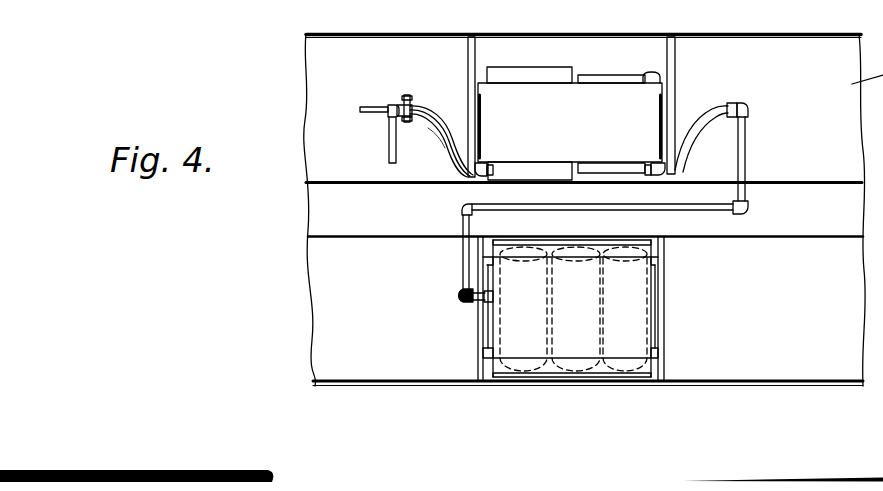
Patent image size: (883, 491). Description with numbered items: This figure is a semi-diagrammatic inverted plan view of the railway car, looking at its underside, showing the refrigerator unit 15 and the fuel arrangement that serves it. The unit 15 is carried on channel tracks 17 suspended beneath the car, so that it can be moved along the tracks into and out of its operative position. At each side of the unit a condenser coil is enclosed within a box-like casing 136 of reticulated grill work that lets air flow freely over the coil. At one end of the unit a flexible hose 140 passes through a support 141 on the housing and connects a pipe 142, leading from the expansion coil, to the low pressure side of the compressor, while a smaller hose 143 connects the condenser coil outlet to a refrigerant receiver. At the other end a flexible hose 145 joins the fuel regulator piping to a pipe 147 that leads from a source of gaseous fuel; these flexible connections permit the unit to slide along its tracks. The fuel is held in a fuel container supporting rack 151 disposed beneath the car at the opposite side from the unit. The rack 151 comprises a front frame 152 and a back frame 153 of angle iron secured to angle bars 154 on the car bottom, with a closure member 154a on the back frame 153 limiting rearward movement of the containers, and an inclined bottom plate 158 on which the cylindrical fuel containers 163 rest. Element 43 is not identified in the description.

The refrigerator unit 15 is at (616, 90).
The channel tracks 17 is at (461, 63).
The heating element 43 is at (597, 78).
The casing 136 is at (543, 77).
The flexible hose 140 is at (438, 136).
The support 141 is at (402, 100).
The pipe 142 is at (388, 146).
The smaller hose 143 is at (444, 120).
The flexible hose 145 is at (715, 106).
The pipe 147 is at (745, 147).
The fuel container supporting rack 151 is at (472, 328).
The front frame 152 is at (653, 353).
The back frame 153 is at (663, 263).
The angle bars 154 is at (492, 374).
The closure member 154a is at (605, 240).
The bottom plate 158 is at (633, 315).
The cylindrical fuel containers 163 is at (603, 306).